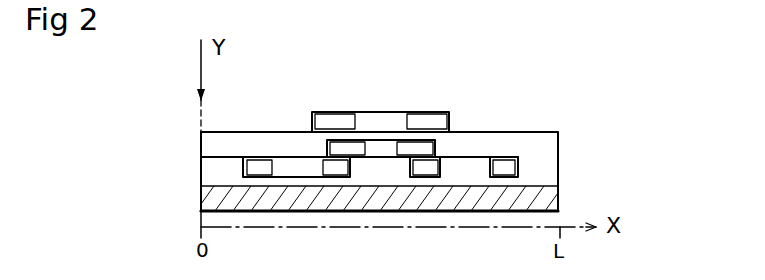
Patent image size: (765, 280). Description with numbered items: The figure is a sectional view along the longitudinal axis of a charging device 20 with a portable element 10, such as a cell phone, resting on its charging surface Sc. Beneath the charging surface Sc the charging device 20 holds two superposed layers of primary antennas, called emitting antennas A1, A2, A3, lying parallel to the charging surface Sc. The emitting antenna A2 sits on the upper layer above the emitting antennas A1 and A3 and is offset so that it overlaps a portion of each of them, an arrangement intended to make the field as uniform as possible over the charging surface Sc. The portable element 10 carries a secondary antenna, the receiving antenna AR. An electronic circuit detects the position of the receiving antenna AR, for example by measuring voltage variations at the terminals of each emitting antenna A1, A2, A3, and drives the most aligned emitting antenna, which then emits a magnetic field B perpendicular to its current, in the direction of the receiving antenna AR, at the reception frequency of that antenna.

The portable element 10 is at (398, 112).
The charging device 20 is at (543, 132).
The emitting antenna A1 is at (260, 168).
The emitting antenna A2 is at (426, 156).
The emitting antenna A3 is at (500, 168).
The receiving antenna AR is at (416, 122).
The charging surface Sc is at (223, 131).
The magnetic field B is at (253, 120).